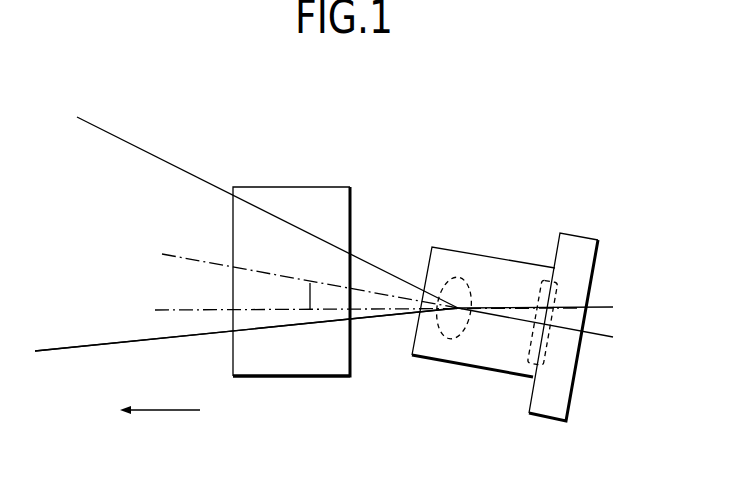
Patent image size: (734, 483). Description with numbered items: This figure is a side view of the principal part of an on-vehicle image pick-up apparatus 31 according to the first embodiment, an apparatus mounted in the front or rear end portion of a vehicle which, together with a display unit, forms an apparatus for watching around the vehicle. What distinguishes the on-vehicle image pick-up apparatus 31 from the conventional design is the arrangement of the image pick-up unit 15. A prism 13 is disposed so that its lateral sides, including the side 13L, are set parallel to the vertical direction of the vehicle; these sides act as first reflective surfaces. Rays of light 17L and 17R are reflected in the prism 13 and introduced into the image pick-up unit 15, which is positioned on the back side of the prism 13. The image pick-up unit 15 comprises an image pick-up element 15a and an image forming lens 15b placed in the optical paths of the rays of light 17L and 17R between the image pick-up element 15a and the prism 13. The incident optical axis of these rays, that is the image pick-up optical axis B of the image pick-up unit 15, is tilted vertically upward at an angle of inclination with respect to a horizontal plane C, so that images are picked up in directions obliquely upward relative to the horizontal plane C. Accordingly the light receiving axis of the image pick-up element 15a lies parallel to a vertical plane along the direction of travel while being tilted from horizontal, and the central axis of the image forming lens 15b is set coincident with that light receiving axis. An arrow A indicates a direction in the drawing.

The on-vehicle image pick-up apparatus 31 is at (574, 140).
The ray of light 17L is at (135, 147).
The ray of light 17R is at (246, 329).
The prism 13 is at (292, 180).
The side of the prism 13L is at (291, 364).
The image pick-up unit 15 is at (493, 247).
The image pick-up element 15a is at (523, 363).
The image forming lens 15b is at (440, 300).
The direction A is at (160, 413).
The image pick-up optical axis B is at (182, 257).
The horizontal plane C is at (162, 310).